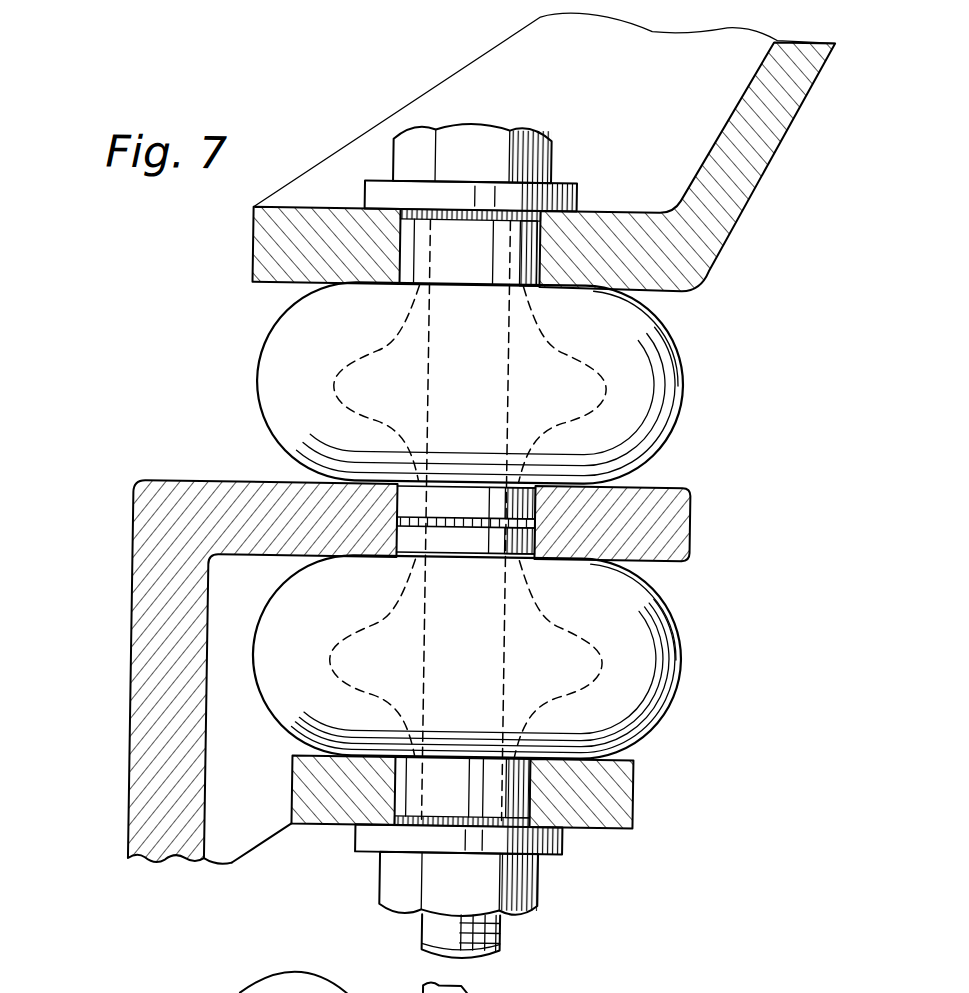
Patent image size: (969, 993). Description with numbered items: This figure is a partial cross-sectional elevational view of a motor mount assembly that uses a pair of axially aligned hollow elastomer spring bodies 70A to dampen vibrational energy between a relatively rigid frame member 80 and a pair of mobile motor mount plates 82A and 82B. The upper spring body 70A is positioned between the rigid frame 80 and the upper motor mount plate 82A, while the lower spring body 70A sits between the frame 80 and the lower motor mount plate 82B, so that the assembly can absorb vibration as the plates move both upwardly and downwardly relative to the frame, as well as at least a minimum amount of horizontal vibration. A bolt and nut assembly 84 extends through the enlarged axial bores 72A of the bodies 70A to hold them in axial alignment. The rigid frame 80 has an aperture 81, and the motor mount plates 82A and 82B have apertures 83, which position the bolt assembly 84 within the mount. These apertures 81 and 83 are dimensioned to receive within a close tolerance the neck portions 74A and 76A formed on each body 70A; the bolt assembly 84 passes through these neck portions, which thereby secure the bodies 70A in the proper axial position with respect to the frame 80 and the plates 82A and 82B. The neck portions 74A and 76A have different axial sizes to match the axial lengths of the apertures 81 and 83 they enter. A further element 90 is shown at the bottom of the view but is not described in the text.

The hollow elastomer spring body 70A is at (665, 357).
The axial bore 72A is at (467, 521).
The neck portion 74A is at (406, 256).
The neck portion 76A is at (401, 501).
The rigid frame member 80 is at (140, 666).
The aperture 81 is at (537, 537).
The motor mount plate 82A is at (770, 150).
The lower motor mount plate 82B is at (634, 788).
The aperture 83 is at (539, 249).
The bolt and nut assembly 84 is at (531, 136).
The housing 90 is at (250, 992).